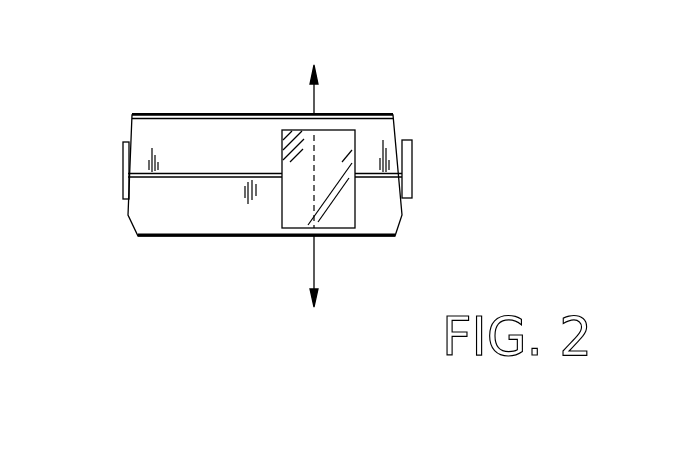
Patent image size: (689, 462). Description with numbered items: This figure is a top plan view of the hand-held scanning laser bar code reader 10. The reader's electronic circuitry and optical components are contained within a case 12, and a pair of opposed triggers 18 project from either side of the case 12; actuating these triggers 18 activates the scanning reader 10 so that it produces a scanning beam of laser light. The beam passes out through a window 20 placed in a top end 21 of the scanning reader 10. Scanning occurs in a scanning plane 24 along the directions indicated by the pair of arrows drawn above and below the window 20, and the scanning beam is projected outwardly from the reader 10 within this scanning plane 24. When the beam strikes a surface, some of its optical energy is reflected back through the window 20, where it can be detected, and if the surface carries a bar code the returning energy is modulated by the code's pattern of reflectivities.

The scanning laser bar code reader 10 is at (358, 88).
The case 12 is at (237, 237).
The triggers 18 is at (123, 165).
The window 20 is at (350, 226).
The top end 21 is at (197, 138).
The scanning plane 24 is at (316, 270).